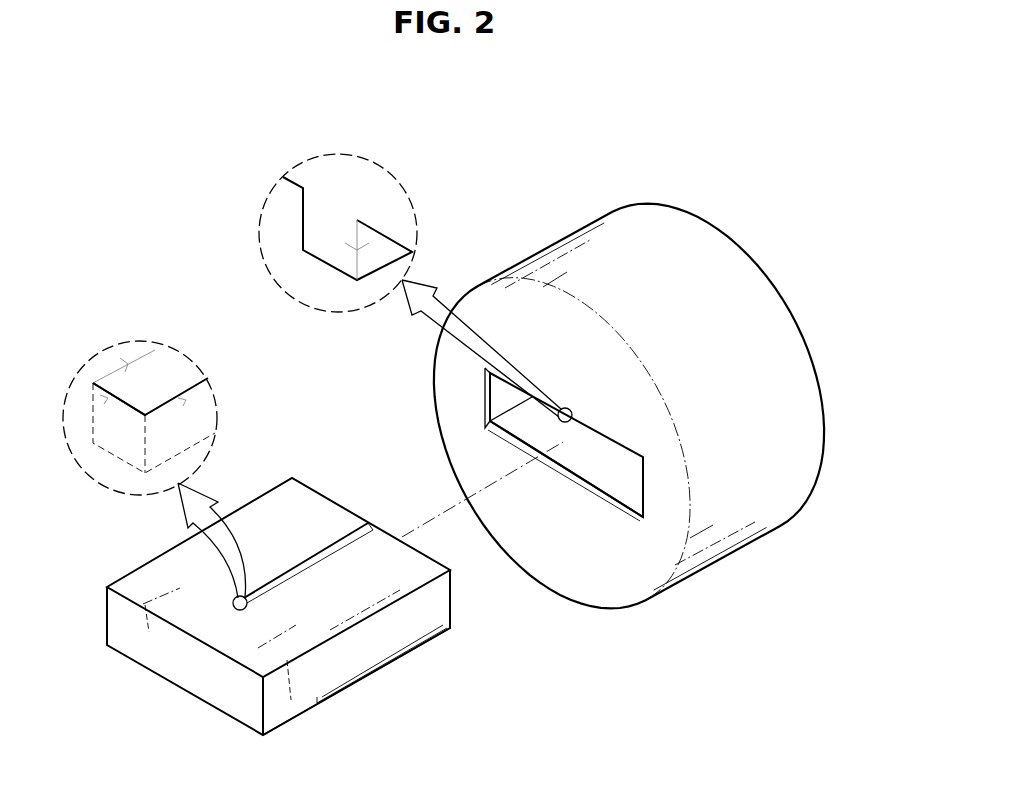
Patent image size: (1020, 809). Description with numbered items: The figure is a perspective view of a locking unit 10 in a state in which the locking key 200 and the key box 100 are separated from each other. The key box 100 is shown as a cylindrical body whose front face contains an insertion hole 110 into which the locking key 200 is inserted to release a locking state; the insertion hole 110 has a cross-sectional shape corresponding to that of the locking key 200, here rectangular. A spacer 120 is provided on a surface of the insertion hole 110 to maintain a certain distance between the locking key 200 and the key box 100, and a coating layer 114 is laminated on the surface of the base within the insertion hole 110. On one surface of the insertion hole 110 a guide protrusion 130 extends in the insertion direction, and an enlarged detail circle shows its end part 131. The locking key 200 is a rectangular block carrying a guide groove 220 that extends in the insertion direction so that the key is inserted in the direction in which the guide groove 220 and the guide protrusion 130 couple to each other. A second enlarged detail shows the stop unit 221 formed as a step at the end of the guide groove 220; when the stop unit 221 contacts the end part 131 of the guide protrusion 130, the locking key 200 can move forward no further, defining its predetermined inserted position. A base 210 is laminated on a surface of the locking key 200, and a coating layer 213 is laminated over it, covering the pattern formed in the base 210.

The locking unit 10 is at (500, 143).
The key box 100 is at (615, 232).
The insertion hole 110 is at (492, 418).
The coating layer 114 is at (627, 478).
The spacer 120 is at (578, 477).
The guide protrusion 130 is at (558, 416).
The end part 131 is at (325, 228).
The locking key 200 is at (200, 680).
The base 210 is at (323, 700).
The coating layer 213 is at (403, 655).
The guide groove 220 is at (345, 540).
The stop unit 221 is at (118, 423).